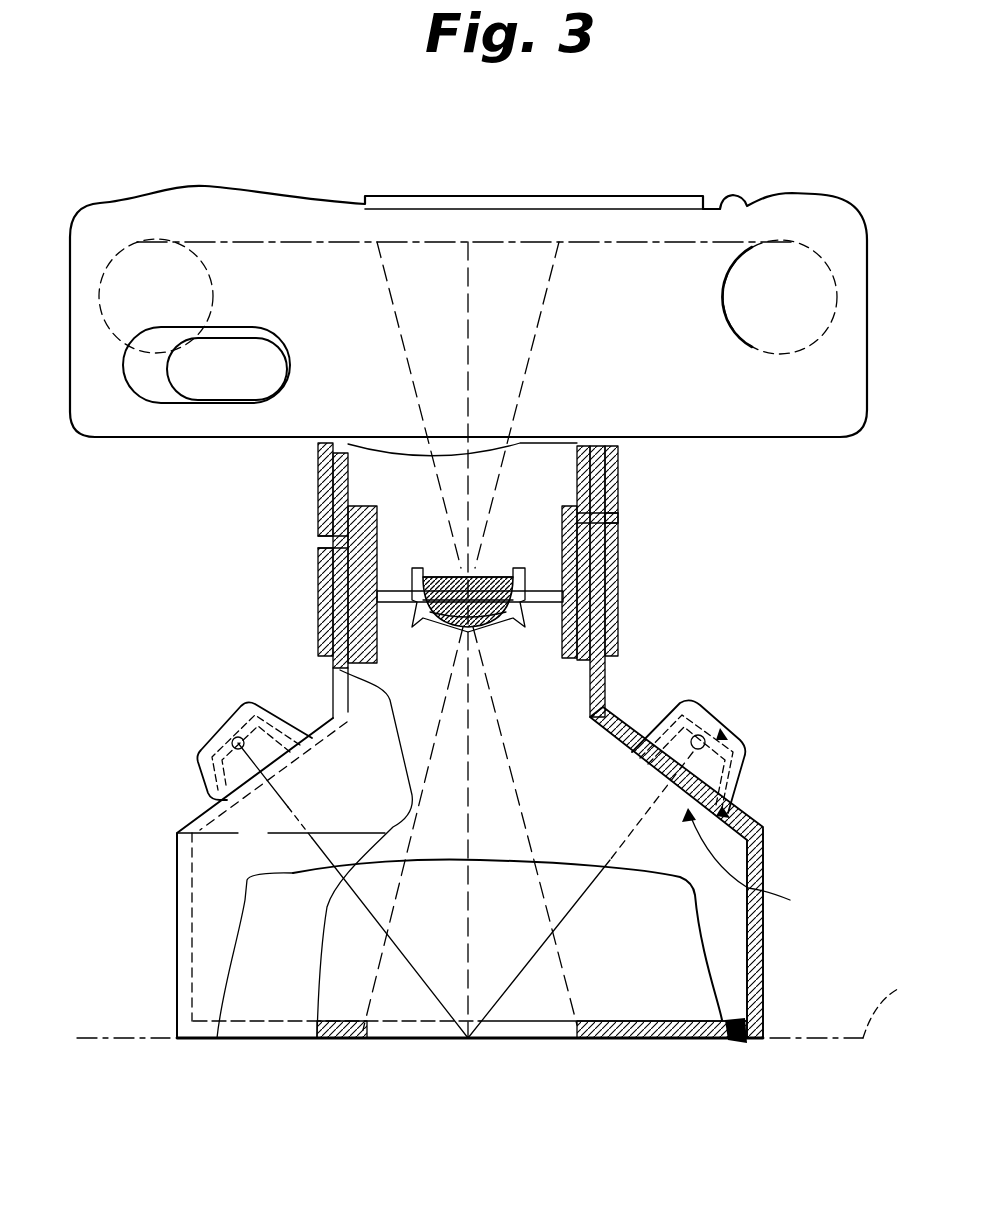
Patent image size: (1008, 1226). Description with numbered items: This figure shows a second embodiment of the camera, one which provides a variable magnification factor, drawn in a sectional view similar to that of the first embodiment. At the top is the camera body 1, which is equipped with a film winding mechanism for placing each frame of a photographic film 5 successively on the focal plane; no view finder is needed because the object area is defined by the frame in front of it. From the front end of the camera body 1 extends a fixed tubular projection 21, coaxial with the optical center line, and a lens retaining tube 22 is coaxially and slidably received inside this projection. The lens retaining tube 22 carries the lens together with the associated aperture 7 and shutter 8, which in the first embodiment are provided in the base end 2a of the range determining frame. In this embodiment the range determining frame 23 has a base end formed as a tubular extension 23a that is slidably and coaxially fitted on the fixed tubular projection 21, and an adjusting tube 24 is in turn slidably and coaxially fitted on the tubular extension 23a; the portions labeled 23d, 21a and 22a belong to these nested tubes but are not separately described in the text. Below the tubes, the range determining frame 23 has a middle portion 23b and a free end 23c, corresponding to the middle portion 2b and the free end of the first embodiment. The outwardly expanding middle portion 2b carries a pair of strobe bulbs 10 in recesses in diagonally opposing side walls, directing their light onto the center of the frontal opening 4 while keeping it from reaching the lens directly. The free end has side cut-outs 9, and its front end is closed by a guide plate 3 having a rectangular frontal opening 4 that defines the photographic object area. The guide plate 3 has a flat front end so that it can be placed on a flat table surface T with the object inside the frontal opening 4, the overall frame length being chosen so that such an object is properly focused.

The camera body 1 is at (205, 185).
The photographic film 5 is at (613, 242).
The outer barrel upper portion 23d is at (318, 462).
The lens barrel engaging portion 21a is at (318, 540).
The middle portion 23b is at (313, 723).
The fixed tubular projection 21 is at (577, 458).
The adjusting tube 24 is at (618, 588).
The barrel engaging portion 22a is at (618, 517).
The lens retaining tube 22 is at (566, 650).
The aperture 7 is at (454, 555).
The shutter 8 is at (447, 568).
The range determining frame 23 is at (198, 718).
The tubular extension 23a is at (607, 688).
The free end 23c is at (177, 977).
The base end 2a is at (750, 813).
The middle portion 2b is at (763, 952).
The side cut-outs 9 is at (258, 900).
The strobe bulbs 10 is at (759, 864).
The guide plate 3 is at (660, 1040).
The frontal opening 4 is at (577, 1020).
The flat table surface T is at (849, 997).